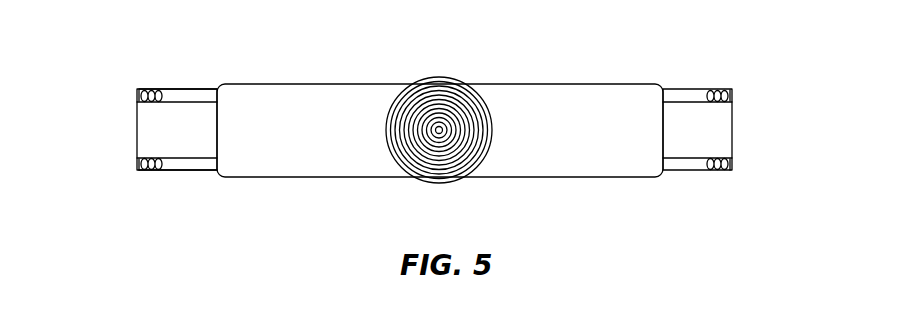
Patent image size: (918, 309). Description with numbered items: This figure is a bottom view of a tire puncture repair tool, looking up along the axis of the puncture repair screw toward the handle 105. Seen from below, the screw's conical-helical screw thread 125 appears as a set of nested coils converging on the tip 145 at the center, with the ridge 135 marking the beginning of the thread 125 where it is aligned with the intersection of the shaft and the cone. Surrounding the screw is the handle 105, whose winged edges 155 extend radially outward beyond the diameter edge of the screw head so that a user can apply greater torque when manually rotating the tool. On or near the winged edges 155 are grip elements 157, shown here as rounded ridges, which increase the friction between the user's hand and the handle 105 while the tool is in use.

The handle 105 is at (267, 141).
The screw thread 125 is at (412, 157).
The ridge 135 is at (447, 110).
The tip 145 is at (438, 127).
The winged edges 155 is at (150, 135).
The grip element 157 is at (185, 93).